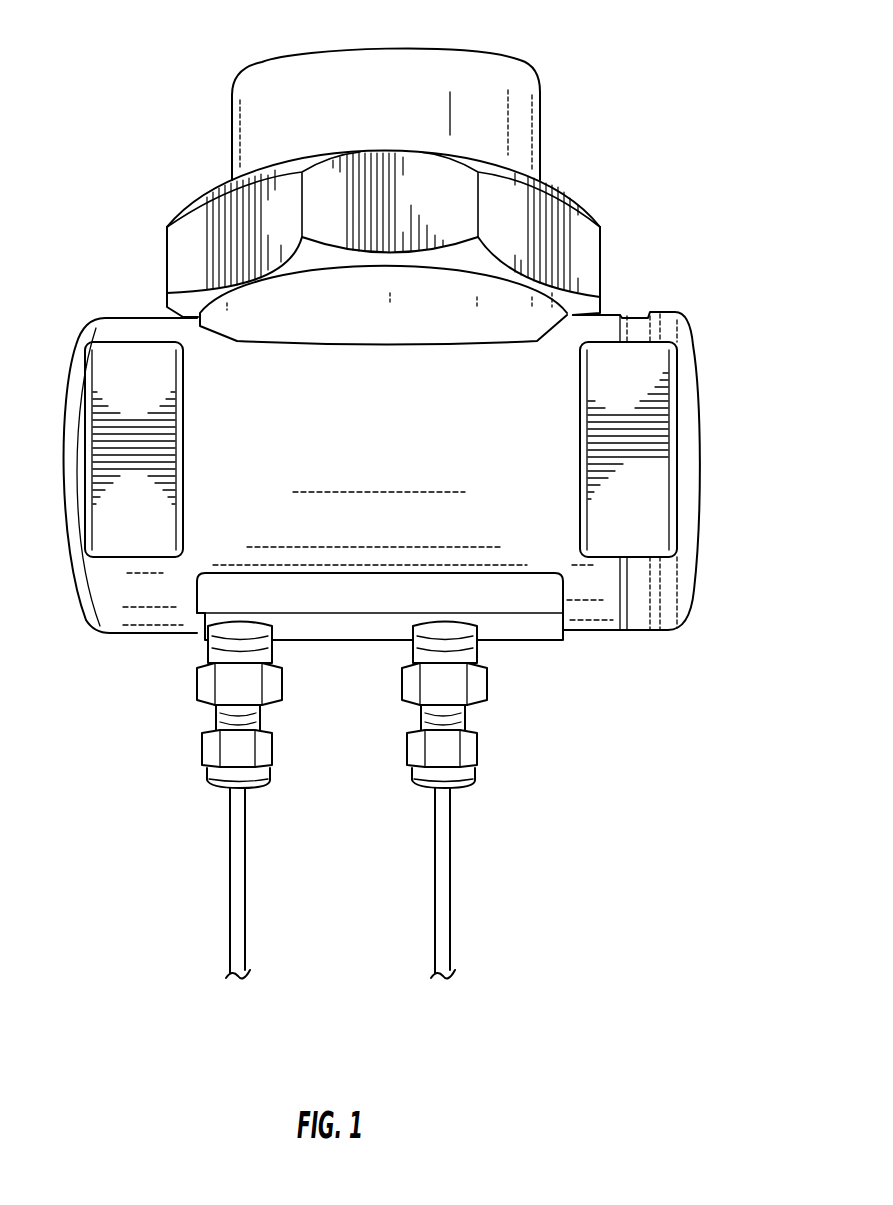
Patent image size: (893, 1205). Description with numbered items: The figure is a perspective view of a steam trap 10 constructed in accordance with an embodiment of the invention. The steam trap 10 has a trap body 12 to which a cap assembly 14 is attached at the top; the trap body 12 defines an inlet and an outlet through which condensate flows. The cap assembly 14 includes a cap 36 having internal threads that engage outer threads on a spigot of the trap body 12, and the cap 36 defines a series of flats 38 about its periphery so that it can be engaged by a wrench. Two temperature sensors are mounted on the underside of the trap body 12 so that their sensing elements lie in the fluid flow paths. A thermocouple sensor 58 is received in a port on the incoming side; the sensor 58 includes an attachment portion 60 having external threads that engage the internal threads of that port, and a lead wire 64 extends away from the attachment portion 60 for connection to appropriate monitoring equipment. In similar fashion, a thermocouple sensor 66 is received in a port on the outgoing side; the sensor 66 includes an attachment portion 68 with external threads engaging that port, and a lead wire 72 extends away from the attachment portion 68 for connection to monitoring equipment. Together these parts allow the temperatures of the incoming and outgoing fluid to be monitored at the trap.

The steam trap 10 is at (630, 107).
The trap body 12 is at (597, 608).
The cap assembly 14 is at (178, 201).
The cap 36 is at (590, 218).
The flats 38 is at (361, 167).
The thermocouple sensor 58 is at (181, 682).
The attachment portion 60 is at (240, 650).
The lead wire 64 is at (237, 897).
The thermocouple sensor 66 is at (521, 723).
The attachment portion 68 is at (483, 658).
The lead wire 72 is at (442, 917).